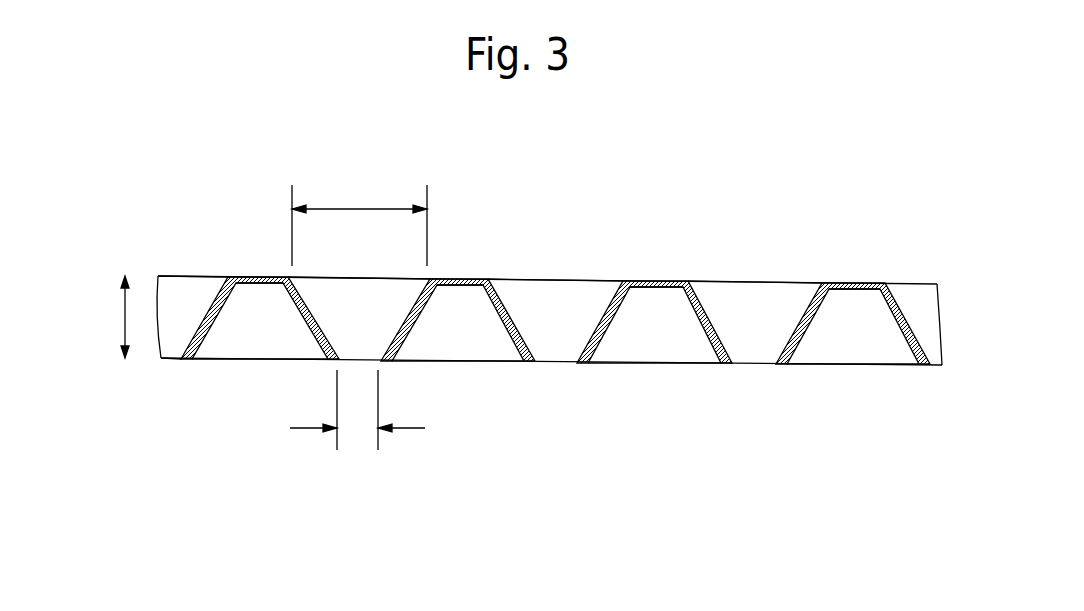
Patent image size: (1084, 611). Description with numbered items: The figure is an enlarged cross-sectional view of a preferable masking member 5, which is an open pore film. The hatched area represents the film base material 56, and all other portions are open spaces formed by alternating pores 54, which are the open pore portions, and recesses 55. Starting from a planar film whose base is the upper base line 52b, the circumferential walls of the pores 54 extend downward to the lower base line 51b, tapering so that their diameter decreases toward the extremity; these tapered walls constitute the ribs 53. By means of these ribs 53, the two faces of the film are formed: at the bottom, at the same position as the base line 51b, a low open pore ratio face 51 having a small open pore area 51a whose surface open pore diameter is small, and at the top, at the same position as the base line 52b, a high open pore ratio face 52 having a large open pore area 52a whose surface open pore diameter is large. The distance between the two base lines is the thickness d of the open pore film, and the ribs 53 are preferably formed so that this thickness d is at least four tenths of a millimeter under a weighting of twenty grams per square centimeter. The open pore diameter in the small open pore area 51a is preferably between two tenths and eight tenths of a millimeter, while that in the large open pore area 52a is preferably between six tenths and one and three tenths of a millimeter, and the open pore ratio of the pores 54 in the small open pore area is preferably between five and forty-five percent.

The masking member 5 is at (897, 259).
The low open pore ratio face 51 is at (173, 360).
The small open pore area 51a is at (357, 426).
The base line 51b is at (150, 356).
The high open pore ratio face 52 is at (183, 273).
The large open pore area 52a is at (359, 219).
The base line 52b is at (145, 275).
The ribs 53 is at (297, 312).
The pores 54 is at (381, 292).
The recesses 55 is at (240, 345).
The film base material 56 is at (243, 276).
The thickness d is at (110, 317).